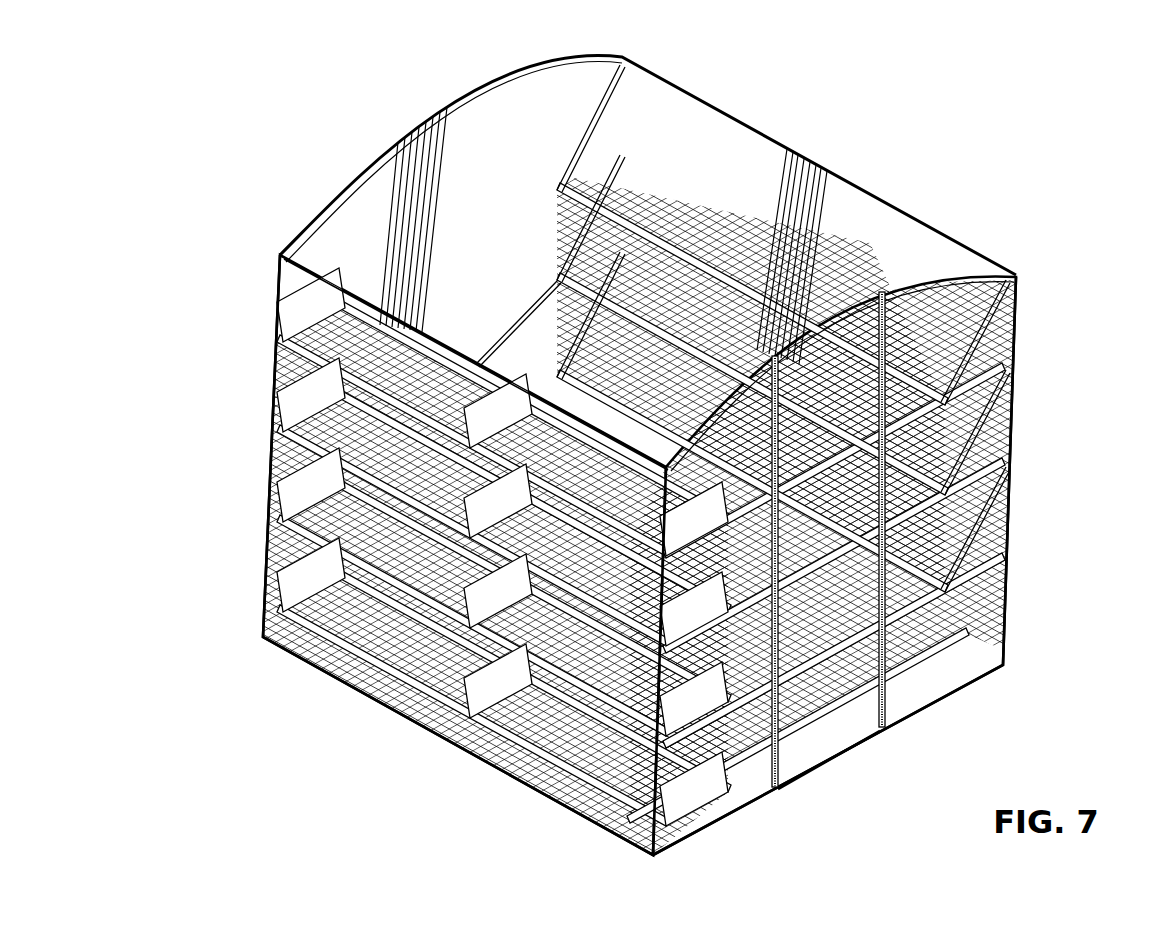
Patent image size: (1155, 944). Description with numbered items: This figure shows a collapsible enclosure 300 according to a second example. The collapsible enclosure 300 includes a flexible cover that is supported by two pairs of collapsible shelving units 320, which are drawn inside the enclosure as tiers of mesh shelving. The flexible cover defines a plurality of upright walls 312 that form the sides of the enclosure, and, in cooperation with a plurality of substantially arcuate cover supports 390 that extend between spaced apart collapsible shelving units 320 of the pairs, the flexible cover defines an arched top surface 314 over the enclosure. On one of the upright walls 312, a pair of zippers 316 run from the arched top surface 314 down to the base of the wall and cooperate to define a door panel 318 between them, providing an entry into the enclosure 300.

The collapsible enclosure 300 is at (300, 208).
The upright walls 312 is at (1017, 405).
The arched top surface 314 is at (900, 235).
The zippers 316 is at (783, 778).
The door panel 318 is at (823, 740).
The collapsible shelving units 320 is at (660, 160).
The arcuate cover supports 390 is at (380, 160).